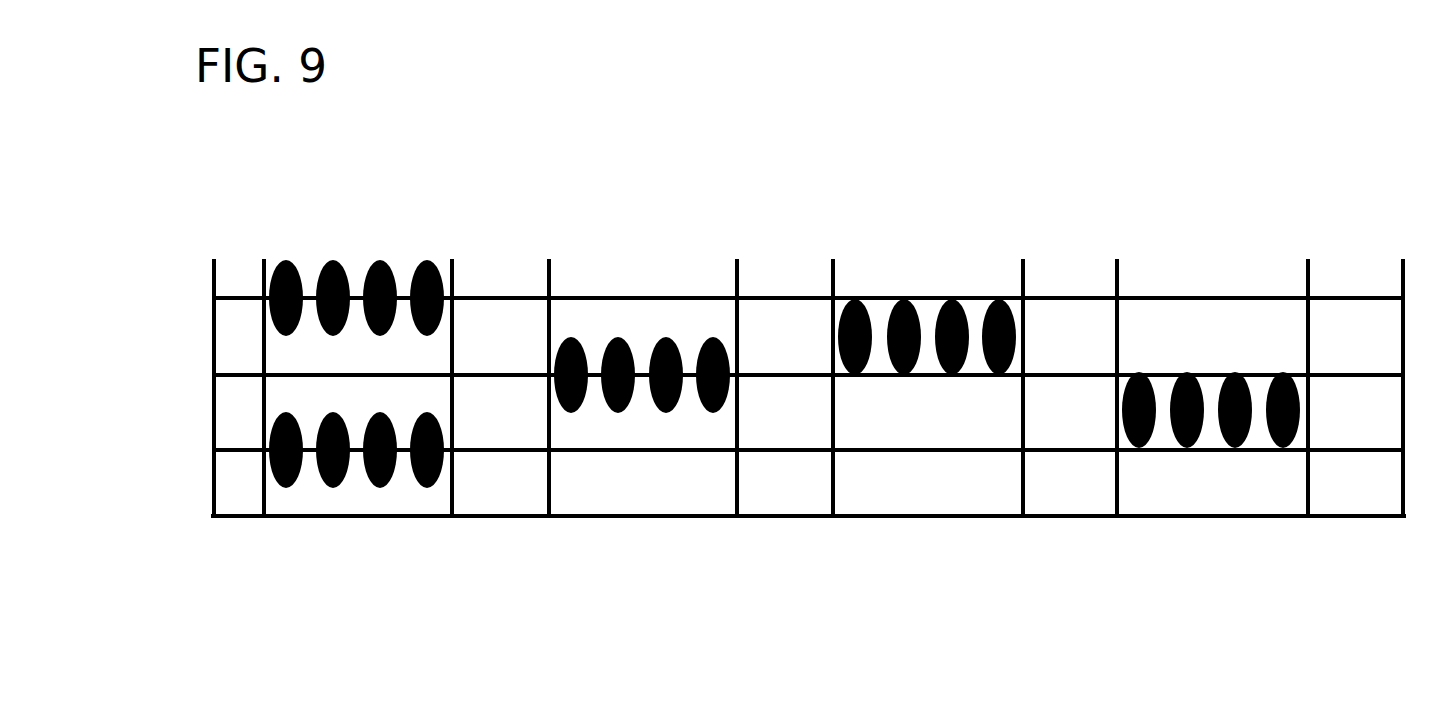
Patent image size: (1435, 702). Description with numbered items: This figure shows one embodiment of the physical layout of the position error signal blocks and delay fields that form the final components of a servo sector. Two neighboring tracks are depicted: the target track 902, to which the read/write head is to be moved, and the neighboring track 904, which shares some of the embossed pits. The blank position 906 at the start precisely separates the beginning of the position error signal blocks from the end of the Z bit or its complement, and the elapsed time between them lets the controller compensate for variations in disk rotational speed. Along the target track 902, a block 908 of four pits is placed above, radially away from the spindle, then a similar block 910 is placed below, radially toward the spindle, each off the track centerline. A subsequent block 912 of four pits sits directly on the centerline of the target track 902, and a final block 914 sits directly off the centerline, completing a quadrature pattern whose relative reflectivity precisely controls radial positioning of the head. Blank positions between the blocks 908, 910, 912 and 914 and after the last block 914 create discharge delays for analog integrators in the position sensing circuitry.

The target track 902 is at (199, 339).
The neighboring track 904 is at (199, 410).
The blank position 906 is at (241, 519).
The block of four pits 908 is at (358, 328).
The block of four pits 910 is at (642, 408).
The block of four pits 912 is at (927, 355).
The final block 914 is at (1210, 435).